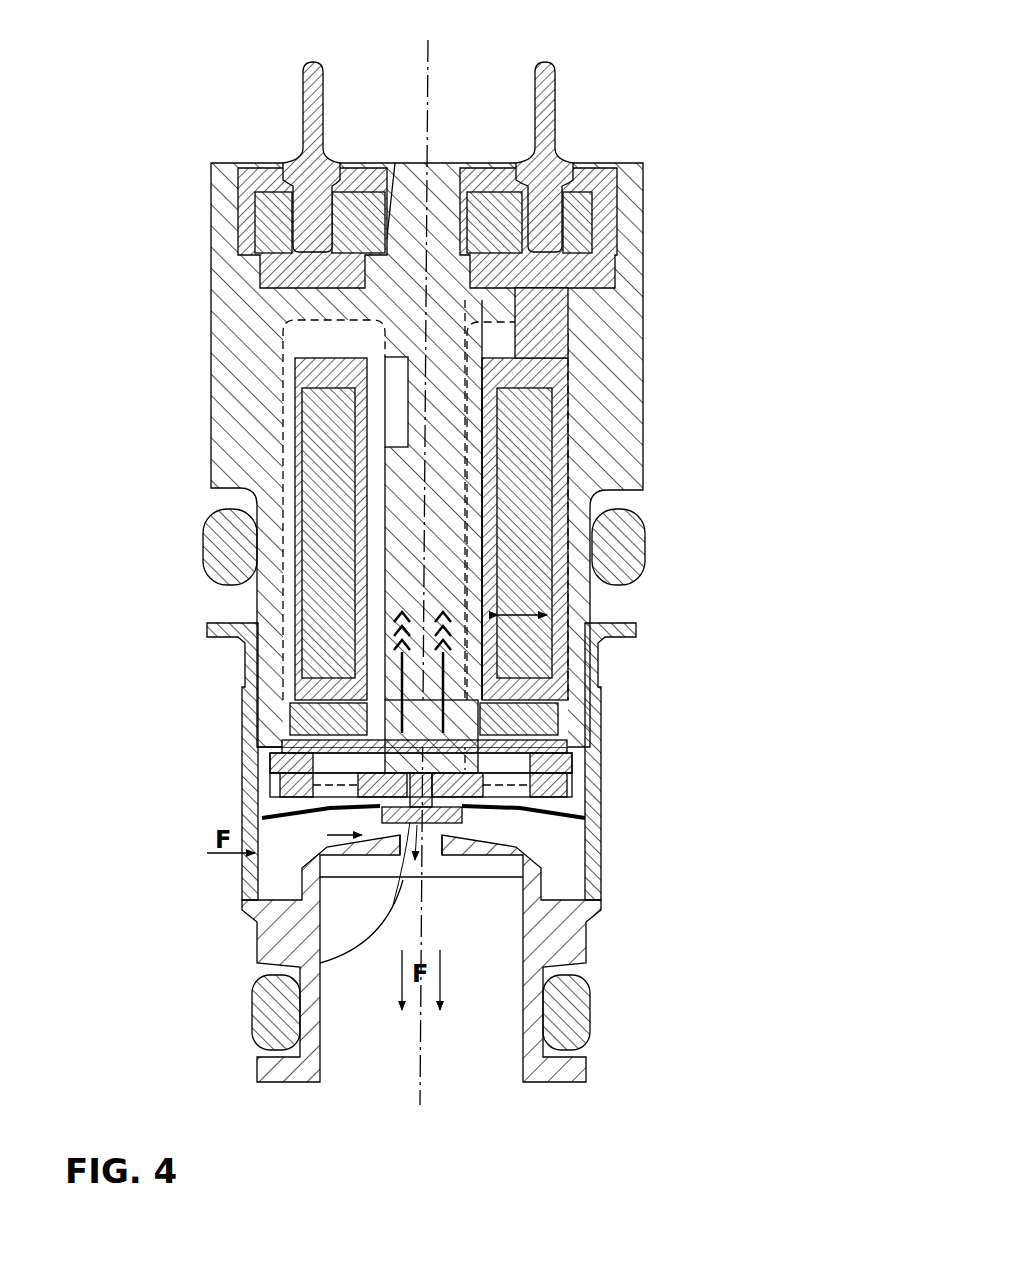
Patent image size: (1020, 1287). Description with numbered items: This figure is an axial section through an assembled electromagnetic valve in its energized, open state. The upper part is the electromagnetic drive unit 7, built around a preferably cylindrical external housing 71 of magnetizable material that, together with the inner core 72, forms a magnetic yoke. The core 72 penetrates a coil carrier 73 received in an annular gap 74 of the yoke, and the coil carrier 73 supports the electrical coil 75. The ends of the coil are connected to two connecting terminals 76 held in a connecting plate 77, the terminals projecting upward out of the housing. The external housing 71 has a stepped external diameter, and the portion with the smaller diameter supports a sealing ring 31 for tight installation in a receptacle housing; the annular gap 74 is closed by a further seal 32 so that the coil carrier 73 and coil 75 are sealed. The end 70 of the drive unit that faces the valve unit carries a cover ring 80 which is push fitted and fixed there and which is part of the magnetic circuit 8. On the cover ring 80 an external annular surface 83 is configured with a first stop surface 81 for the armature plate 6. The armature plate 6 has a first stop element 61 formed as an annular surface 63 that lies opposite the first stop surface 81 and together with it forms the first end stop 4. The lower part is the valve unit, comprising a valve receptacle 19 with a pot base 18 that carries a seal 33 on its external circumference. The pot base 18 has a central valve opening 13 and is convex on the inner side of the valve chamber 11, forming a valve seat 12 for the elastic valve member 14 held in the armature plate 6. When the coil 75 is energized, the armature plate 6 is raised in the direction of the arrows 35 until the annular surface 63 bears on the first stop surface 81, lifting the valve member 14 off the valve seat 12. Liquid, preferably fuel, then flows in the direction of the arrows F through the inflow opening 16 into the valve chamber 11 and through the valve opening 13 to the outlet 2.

The outlet 2 is at (368, 1018).
The first end stop 4 is at (245, 780).
The armature plate 6 is at (280, 792).
The electromagnetic drive unit 7 is at (688, 317).
The magnetic circuit 8 is at (270, 378).
The valve chamber 11 is at (285, 882).
The valve seat 12 is at (447, 830).
The valve opening 13 is at (297, 977).
The valve member 14 is at (433, 830).
The inflow opening 16 is at (253, 856).
The pot base 18 is at (395, 828).
The valve receptacle 19 is at (590, 925).
The sealing ring 31 is at (623, 557).
The further seal 32 is at (290, 712).
The seal 33 is at (575, 1015).
The arrows 35 is at (382, 670).
The first stop element 61 is at (273, 763).
The annular surface 63 is at (290, 740).
The end 70 is at (575, 697).
The external housing 71 is at (630, 370).
The core 72 is at (447, 525).
The coil carrier 73 is at (497, 472).
The annular gap 74 is at (590, 603).
The electrical coil 75 is at (320, 455).
The connecting terminals 76 is at (312, 122).
The connecting plate 77 is at (290, 268).
The cover ring 80 is at (567, 757).
The first stop surface 81 is at (585, 785).
The external annular surface 83 is at (567, 793).